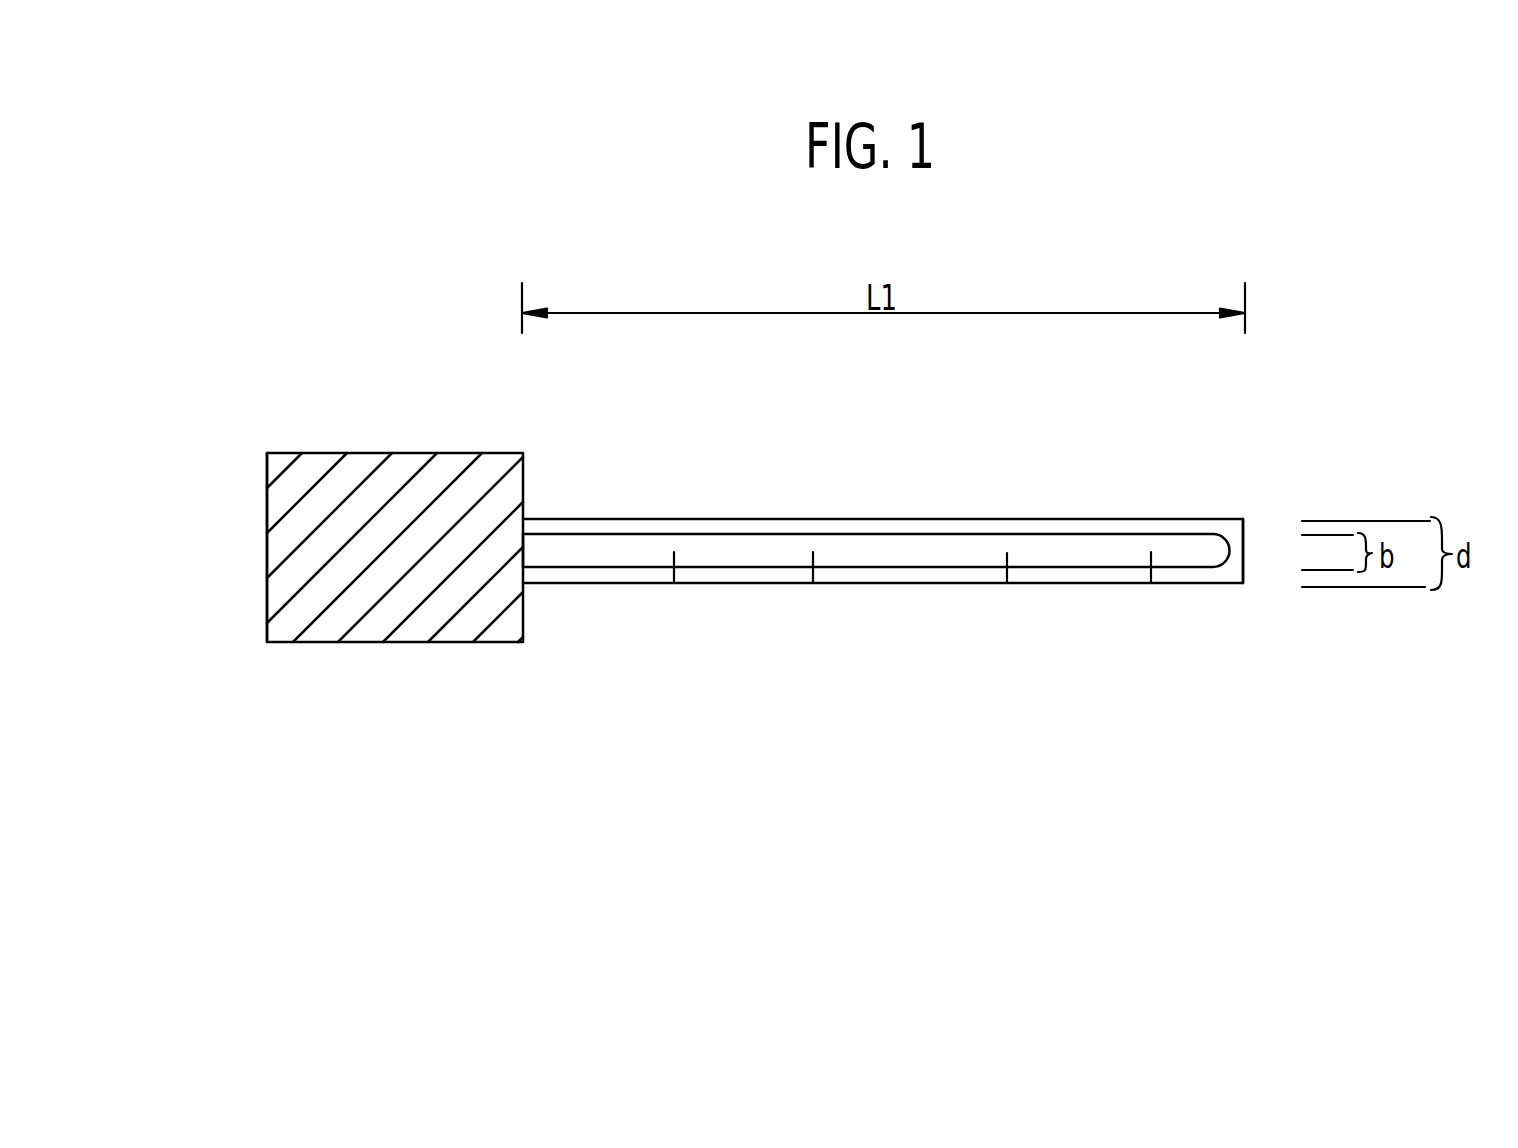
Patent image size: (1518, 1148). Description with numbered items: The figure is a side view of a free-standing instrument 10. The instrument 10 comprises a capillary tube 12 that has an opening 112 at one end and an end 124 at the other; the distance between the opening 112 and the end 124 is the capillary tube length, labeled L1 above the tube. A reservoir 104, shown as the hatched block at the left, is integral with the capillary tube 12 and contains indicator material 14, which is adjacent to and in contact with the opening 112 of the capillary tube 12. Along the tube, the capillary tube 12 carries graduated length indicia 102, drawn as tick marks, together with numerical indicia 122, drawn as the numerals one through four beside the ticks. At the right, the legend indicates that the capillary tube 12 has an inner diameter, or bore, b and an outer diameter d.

The free-standing instrument 10 is at (820, 912).
The capillary tube 12 is at (1052, 583).
The indicator material 14 is at (366, 603).
The graduated length indicia 102 is at (810, 577).
The reservoir 104 is at (267, 563).
The opening 112 is at (521, 557).
The numerical indicia 122 is at (1015, 545).
The end 124 is at (1248, 560).